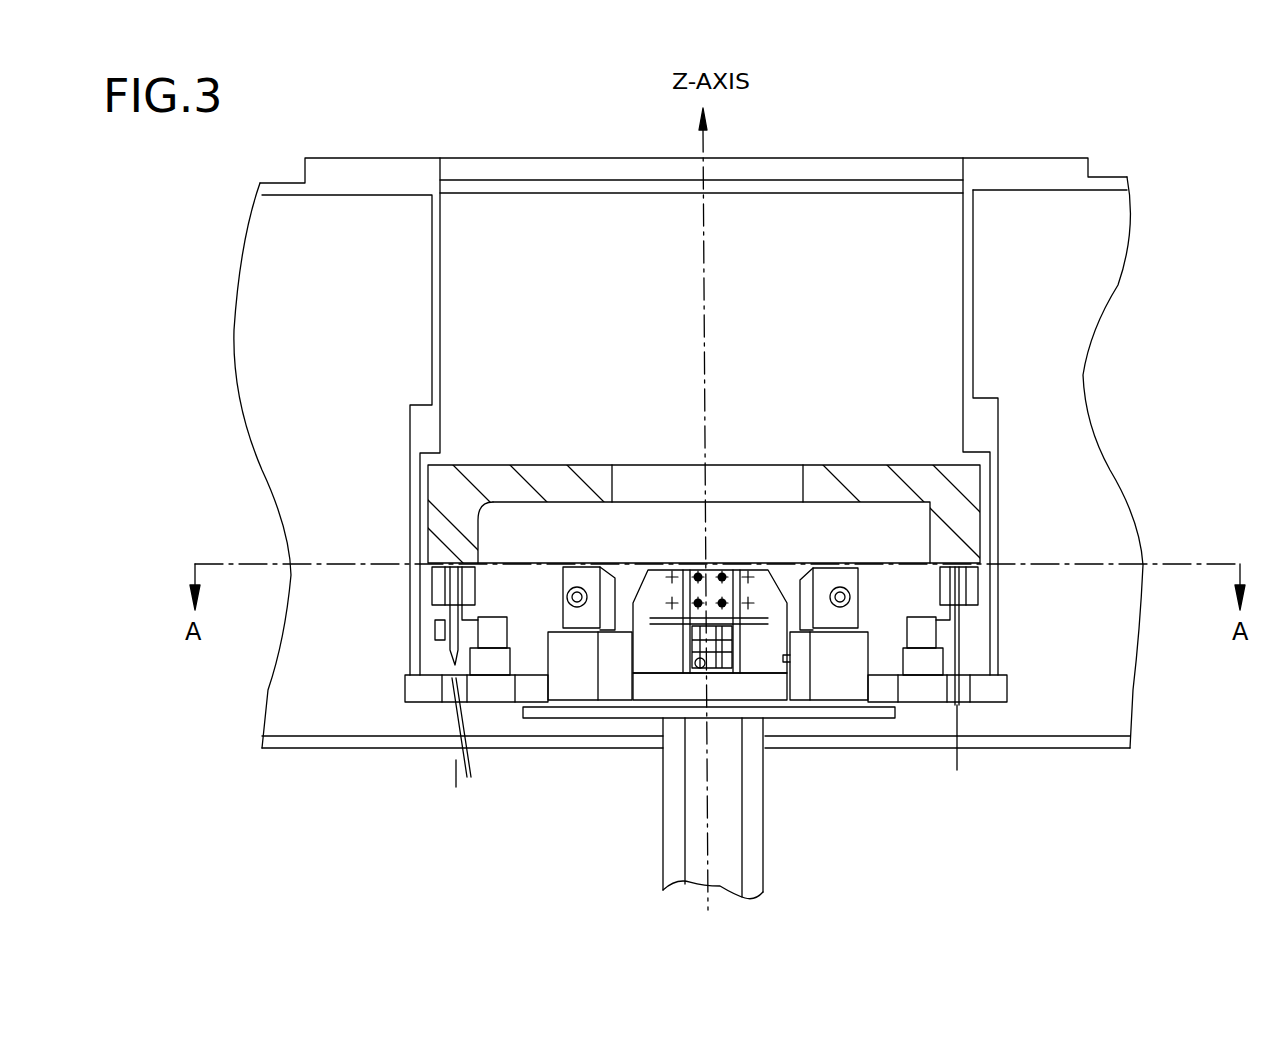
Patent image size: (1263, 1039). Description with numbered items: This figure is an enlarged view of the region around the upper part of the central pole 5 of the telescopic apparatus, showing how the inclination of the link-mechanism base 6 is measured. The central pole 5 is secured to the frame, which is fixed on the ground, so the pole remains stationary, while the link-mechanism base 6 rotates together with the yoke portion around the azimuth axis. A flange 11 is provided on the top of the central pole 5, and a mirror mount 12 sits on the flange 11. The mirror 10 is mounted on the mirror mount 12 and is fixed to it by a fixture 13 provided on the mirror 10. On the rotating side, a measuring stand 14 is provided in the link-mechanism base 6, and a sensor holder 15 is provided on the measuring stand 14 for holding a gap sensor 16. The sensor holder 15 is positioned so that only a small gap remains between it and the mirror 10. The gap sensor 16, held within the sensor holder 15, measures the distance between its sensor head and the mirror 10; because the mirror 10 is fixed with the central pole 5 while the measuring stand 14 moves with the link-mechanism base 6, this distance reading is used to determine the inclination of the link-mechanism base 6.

The central pole 5 is at (763, 812).
The link-mechanism base 6 is at (373, 157).
The mirror 10 is at (980, 483).
The flange 11 is at (580, 718).
The mirror mount 12 is at (870, 683).
The fixture 13 is at (560, 567).
The measuring stand 14 is at (402, 690).
The sensor holder 15 is at (440, 604).
The gap sensor 16 is at (975, 578).